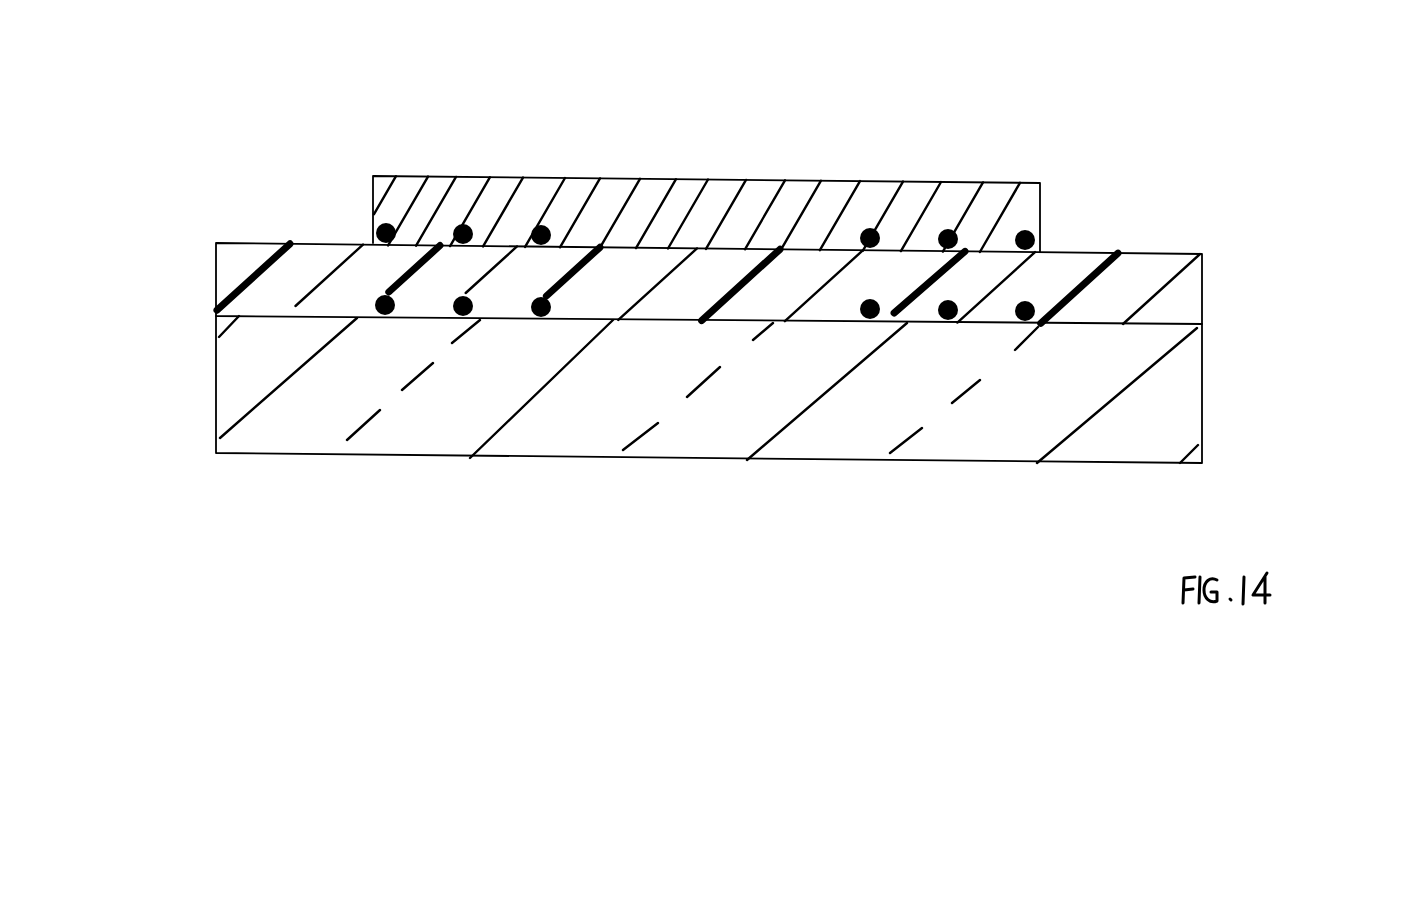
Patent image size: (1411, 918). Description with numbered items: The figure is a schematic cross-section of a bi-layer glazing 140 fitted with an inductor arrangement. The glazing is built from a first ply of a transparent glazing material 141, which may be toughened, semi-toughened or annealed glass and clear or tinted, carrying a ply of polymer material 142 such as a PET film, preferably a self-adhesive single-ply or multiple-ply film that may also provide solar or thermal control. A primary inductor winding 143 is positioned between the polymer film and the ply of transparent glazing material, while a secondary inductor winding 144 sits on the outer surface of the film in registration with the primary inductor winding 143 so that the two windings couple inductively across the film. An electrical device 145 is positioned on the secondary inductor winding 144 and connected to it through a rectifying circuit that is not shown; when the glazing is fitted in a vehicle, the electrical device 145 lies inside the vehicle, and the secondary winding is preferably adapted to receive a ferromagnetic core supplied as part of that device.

The bi-layer glazing 140 is at (1256, 275).
The ply of transparent glazing material 141 is at (1180, 427).
The ply of polymer material 142 is at (232, 262).
The primary inductor winding 143 is at (373, 323).
The secondary inductor winding 144 is at (381, 220).
The electrical device 145 is at (878, 172).